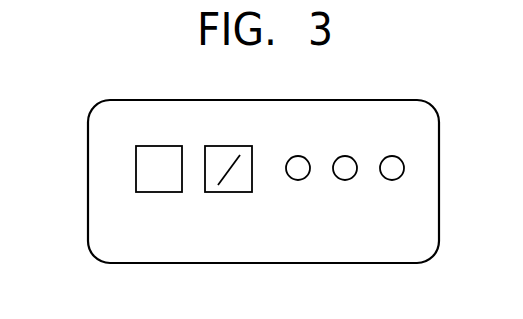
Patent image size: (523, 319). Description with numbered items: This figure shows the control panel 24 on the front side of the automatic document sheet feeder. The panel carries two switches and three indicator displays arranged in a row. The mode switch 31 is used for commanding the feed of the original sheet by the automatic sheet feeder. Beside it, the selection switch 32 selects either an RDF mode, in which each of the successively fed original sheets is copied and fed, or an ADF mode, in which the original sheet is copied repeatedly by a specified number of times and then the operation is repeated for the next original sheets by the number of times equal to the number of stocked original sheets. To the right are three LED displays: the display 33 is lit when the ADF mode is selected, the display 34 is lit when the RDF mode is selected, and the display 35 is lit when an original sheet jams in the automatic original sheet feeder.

The control panel 24 is at (439, 114).
The mode switch 31 is at (162, 192).
The selection switch 32 is at (227, 192).
The LED display 33 is at (298, 180).
The LED display 34 is at (345, 180).
The LED display 35 is at (392, 180).